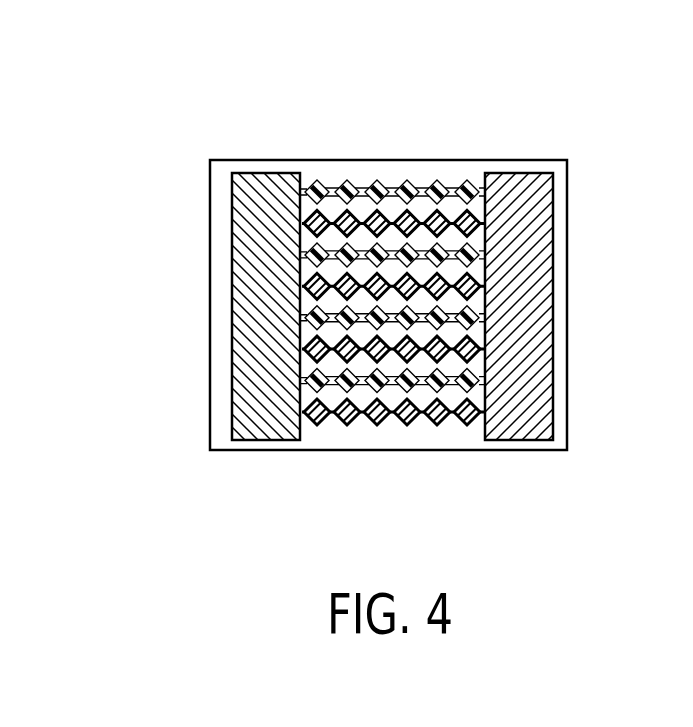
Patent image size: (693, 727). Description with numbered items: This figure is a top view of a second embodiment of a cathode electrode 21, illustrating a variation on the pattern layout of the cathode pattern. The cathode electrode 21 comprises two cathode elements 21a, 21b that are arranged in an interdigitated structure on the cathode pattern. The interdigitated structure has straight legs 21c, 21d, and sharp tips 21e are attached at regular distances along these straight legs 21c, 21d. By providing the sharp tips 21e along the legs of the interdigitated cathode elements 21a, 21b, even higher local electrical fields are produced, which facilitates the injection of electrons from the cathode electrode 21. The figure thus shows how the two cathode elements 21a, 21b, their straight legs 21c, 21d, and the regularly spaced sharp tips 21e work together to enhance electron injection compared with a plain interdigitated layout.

The cathode electrode 21 is at (191, 95).
The cathode element 21a is at (265, 173).
The cathode element 21b is at (481, 285).
The straight leg 21c is at (334, 186).
The straight leg 21d is at (459, 224).
The sharp tips 21e is at (392, 302).